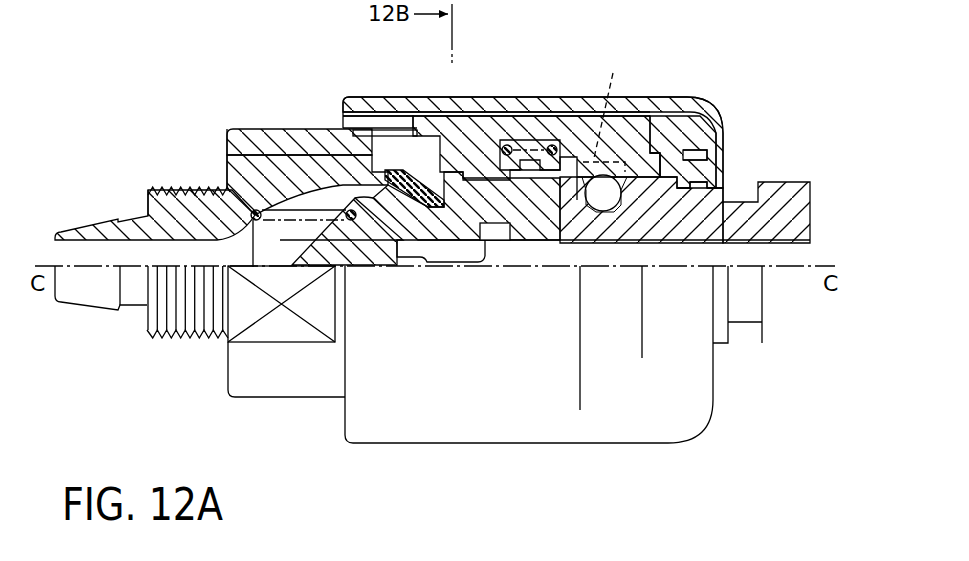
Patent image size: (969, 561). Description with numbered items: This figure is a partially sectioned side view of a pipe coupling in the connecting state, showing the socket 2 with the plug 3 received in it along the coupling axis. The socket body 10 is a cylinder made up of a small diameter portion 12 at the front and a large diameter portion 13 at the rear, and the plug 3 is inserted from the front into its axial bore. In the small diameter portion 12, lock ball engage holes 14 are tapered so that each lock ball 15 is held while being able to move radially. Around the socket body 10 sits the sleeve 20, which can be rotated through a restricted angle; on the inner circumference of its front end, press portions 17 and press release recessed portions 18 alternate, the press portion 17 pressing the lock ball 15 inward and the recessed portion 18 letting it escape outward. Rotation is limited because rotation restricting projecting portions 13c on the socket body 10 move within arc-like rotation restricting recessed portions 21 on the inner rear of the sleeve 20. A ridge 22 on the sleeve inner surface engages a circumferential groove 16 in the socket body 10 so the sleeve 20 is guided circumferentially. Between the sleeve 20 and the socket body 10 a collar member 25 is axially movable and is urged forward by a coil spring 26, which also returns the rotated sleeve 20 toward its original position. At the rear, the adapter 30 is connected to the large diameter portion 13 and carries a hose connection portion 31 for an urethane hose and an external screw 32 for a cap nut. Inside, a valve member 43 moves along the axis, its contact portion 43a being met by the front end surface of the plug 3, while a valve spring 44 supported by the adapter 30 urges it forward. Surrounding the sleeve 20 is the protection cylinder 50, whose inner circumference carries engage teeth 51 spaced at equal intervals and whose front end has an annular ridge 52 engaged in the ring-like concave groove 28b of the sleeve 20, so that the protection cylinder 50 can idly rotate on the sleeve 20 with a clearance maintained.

The socket 2 is at (719, 99).
The plug 3 is at (784, 177).
The socket body 10 is at (249, 126).
The small diameter portion 12 is at (666, 190).
The large diameter portion 13 is at (300, 138).
The rotation restricting projecting portions 13c is at (383, 130).
The lock ball engage holes 14 is at (558, 215).
The lock ball 15 is at (607, 205).
The groove 16 is at (692, 186).
The press portions 17 is at (696, 157).
The press release recessed portions 18 is at (604, 109).
The sleeve 20 is at (352, 105).
The rotation restricting recessed portions 21 is at (418, 128).
The ridge 22 is at (690, 182).
The collar member 25 is at (548, 145).
The coil spring 26 is at (505, 145).
The ring-like concave groove 28b is at (694, 160).
The adapter 30 is at (146, 188).
The hose connection portion 31 is at (78, 250).
The external screw 32 is at (192, 187).
The valve member 43 is at (378, 250).
The contact portion 43a is at (476, 244).
The valve spring 44 is at (259, 222).
The protection cylinder 50 is at (574, 107).
The engage teeth 51 is at (630, 130).
The annular ridge 52 is at (716, 126).